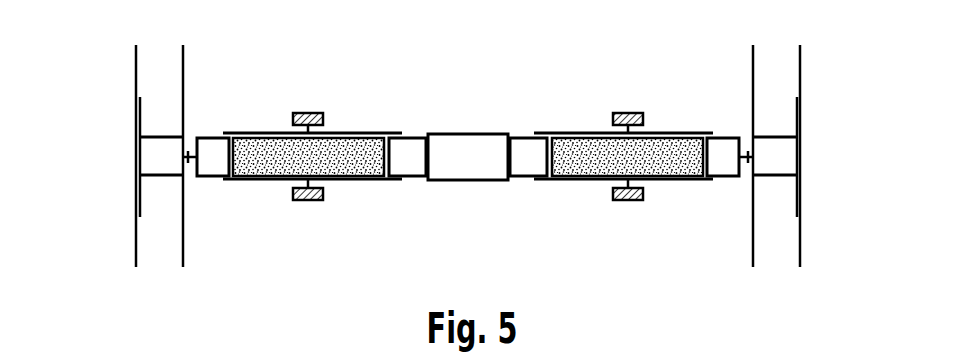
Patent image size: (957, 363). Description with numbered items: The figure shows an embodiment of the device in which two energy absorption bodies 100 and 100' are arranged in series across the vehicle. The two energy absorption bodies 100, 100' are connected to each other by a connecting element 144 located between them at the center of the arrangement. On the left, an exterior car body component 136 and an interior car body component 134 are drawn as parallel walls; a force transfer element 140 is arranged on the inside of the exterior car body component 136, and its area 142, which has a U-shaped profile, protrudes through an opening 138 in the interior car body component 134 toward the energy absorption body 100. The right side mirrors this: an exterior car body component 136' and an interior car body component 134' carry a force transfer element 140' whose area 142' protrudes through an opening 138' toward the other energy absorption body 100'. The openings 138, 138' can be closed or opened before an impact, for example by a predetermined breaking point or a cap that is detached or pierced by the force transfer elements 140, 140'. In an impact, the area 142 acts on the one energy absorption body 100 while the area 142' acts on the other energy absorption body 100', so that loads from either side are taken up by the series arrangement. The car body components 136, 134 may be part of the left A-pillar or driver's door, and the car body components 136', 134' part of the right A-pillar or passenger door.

The energy absorption body 100 is at (311, 118).
The energy absorption body 100' is at (624, 118).
The interior car body component 134 is at (225, 156).
The interior car body component 134' is at (708, 156).
The exterior car body component 136 is at (93, 156).
The exterior car body component 136' is at (844, 156).
The opening 138 is at (162, 83).
The opening 138' is at (785, 83).
The force transfer element 140 is at (118, 126).
The force transfer element 140' is at (818, 126).
The area 142 is at (135, 212).
The area 142' is at (803, 212).
The connecting element 144 is at (468, 134).